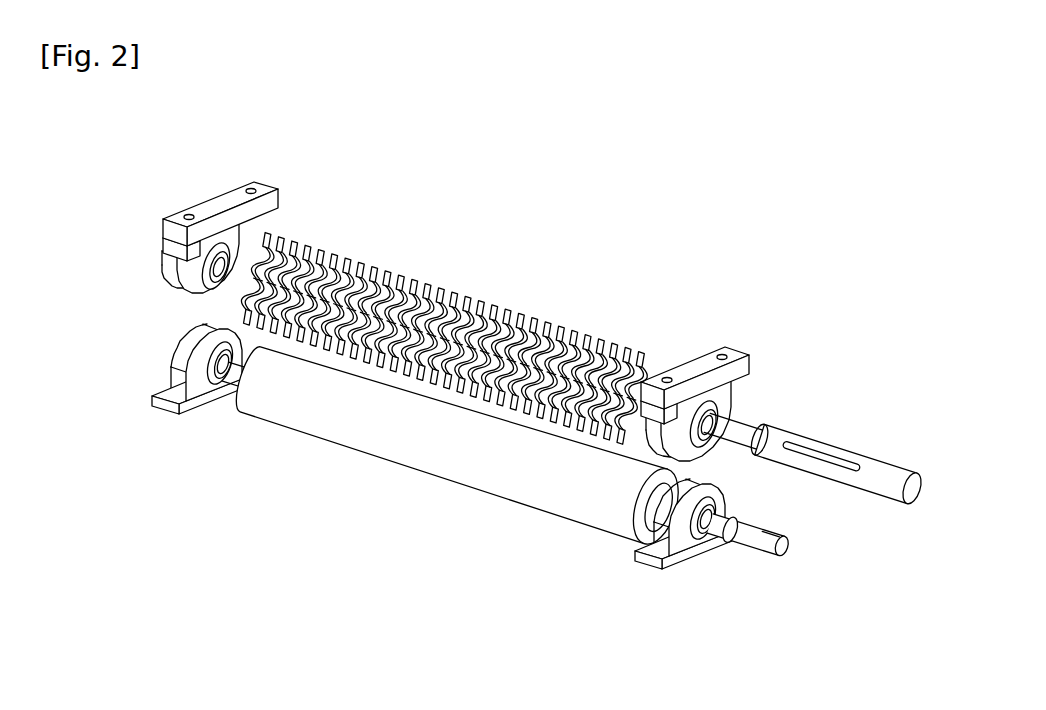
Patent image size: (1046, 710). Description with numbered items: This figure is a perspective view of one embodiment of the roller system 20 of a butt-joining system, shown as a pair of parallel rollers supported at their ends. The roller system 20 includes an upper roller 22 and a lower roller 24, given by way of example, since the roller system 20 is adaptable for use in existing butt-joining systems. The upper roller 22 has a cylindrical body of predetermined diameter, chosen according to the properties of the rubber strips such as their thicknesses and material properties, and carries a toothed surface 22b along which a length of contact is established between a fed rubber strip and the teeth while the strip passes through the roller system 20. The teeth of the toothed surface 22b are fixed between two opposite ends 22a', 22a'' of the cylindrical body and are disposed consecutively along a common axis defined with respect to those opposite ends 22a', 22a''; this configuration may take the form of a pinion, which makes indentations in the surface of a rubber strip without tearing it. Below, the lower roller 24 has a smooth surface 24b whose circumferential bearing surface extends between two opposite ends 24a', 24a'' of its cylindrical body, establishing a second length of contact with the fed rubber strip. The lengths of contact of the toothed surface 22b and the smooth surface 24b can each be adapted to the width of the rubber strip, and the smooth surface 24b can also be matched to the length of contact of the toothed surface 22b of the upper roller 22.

The roller system 20 is at (555, 240).
The upper roller 22 is at (596, 346).
The end of the cylindrical body 22a' is at (220, 215).
The end of the cylindrical body 22a'' is at (693, 369).
The toothed surface 22b is at (433, 298).
The lower roller 24 is at (435, 490).
The end of the cylindrical body 24a' is at (207, 420).
The end of the cylindrical body 24a'' is at (685, 561).
The smooth surface 24b is at (387, 433).